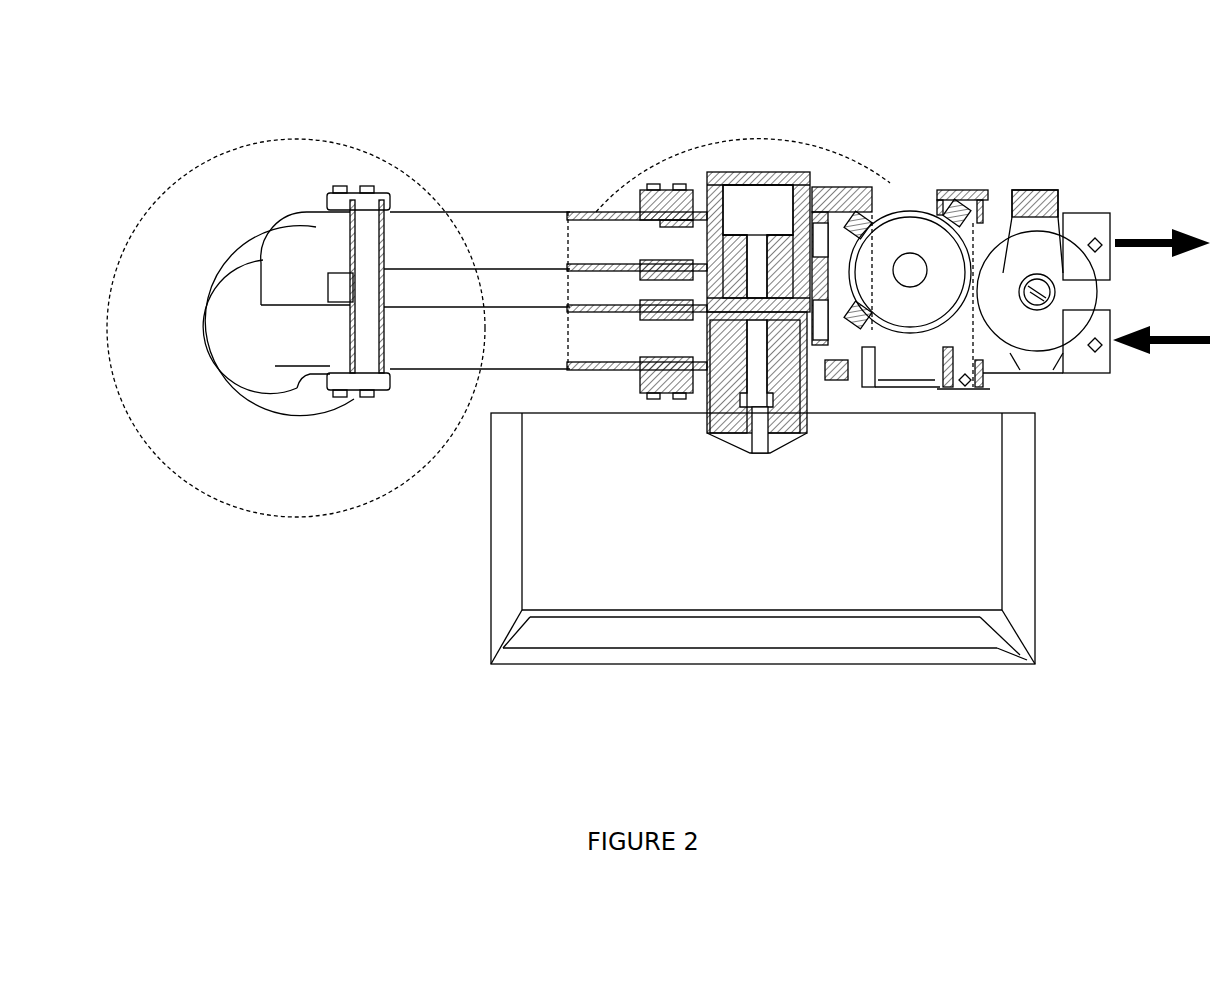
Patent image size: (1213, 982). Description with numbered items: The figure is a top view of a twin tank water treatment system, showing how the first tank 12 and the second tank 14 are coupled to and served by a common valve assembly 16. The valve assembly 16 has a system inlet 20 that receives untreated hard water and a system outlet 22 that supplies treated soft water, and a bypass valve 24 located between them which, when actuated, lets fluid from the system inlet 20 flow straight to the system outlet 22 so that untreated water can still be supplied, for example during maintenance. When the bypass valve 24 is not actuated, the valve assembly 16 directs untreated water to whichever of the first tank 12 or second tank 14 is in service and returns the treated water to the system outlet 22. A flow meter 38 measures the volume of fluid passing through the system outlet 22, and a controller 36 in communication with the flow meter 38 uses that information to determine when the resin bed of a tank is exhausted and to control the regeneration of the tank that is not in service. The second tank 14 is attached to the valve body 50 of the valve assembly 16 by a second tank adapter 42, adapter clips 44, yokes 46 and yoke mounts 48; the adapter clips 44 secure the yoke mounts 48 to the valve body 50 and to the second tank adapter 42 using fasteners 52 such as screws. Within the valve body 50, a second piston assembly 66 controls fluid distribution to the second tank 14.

The first tank 12 is at (850, 163).
The second tank 14 is at (217, 150).
The valve assembly 16 is at (1085, 460).
The system inlet 20 is at (1100, 360).
The system outlet 22 is at (1100, 230).
The bypass valve 24 is at (1017, 270).
The controller 36 is at (1018, 547).
The flow meter 38 is at (900, 243).
The second tank adapter 42 is at (257, 377).
The adapter clips 44 is at (373, 193).
The yokes 46 is at (513, 212).
The yoke mounts 48 is at (370, 270).
The valve body 50 is at (713, 197).
The fasteners 52 is at (367, 187).
The second piston assembly 66 is at (753, 195).